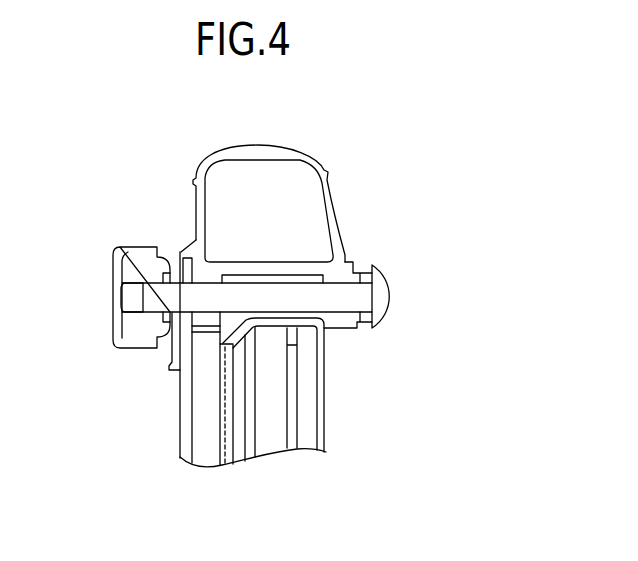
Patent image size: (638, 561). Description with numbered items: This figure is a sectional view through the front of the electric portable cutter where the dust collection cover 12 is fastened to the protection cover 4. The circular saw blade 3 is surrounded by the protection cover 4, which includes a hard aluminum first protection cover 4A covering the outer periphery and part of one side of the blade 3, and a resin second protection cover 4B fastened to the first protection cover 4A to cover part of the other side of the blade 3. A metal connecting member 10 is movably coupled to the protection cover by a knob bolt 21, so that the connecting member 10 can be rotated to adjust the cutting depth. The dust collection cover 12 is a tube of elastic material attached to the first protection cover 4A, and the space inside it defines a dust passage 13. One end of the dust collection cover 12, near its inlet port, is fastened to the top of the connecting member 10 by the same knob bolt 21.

The circular saw blade 3 is at (292, 433).
The protection cover 4 is at (329, 440).
The first protection cover 4A is at (329, 382).
The second protection cover 4B is at (178, 435).
The connecting member 10 is at (172, 362).
The dust collection cover 12 is at (338, 188).
The dust passage 13 is at (240, 198).
The knob bolt 21 is at (129, 248).